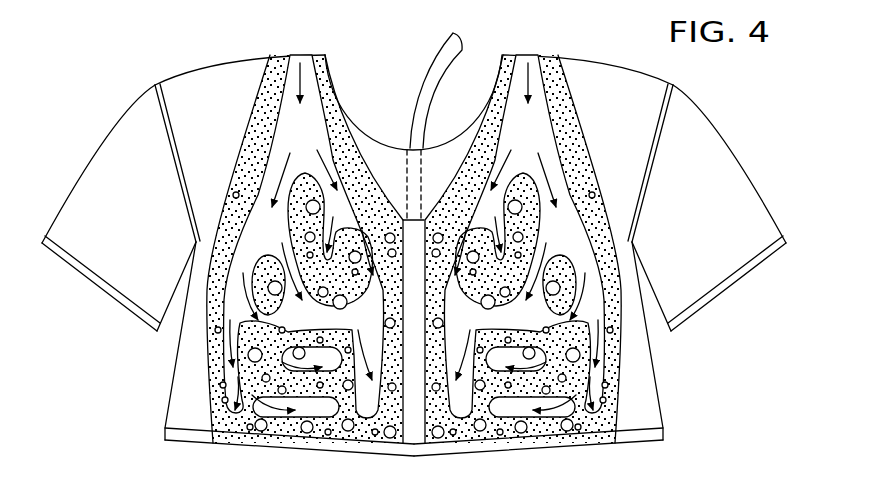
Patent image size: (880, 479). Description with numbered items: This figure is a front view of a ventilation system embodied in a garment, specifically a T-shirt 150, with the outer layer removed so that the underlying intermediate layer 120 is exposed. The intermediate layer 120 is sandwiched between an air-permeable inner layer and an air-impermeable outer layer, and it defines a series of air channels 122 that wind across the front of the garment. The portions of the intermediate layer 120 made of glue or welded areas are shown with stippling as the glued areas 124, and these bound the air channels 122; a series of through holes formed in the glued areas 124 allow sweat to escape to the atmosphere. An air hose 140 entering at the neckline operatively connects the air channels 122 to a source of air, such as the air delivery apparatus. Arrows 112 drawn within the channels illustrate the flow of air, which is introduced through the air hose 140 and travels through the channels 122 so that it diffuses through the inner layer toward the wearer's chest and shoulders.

The arrows 112 is at (273, 178).
The intermediate layer 120 is at (256, 129).
The air channels 122 is at (260, 234).
The glued areas 124 is at (213, 283).
The air hose 140 is at (424, 74).
The T-shirt 150 is at (710, 180).